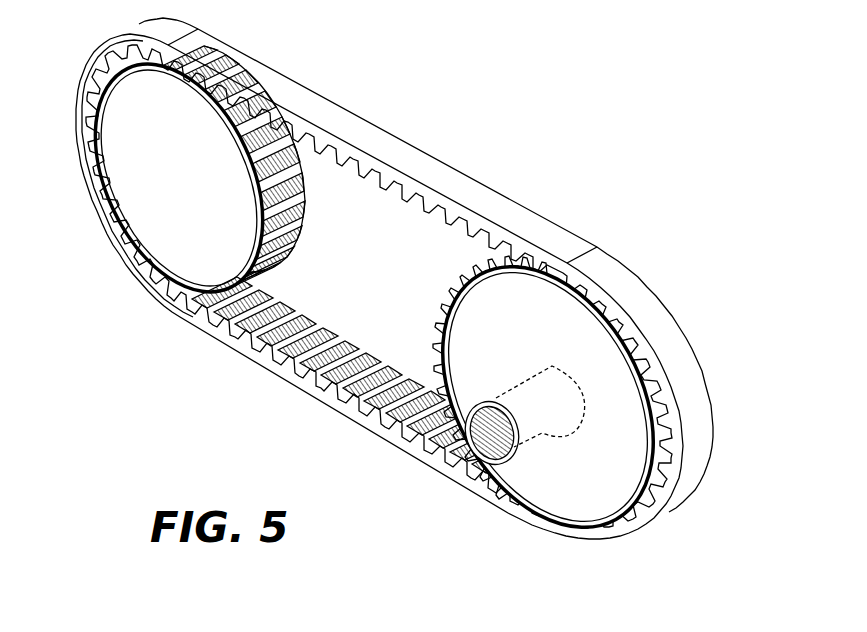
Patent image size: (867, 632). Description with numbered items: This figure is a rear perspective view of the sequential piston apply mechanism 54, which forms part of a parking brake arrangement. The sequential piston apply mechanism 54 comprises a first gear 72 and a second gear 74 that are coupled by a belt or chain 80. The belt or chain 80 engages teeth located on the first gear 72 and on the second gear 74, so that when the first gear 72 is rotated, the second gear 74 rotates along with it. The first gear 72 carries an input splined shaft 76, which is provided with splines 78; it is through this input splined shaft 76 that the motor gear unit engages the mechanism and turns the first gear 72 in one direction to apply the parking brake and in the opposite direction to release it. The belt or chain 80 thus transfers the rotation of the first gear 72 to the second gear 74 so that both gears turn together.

The belt drive assembly 54 is at (391, 301).
The driven pulley 72 is at (628, 398).
The drive pulley 74 is at (122, 147).
The shaft 76 is at (547, 437).
The hub bearing 78 is at (467, 468).
The toothed belt 80 is at (372, 142).